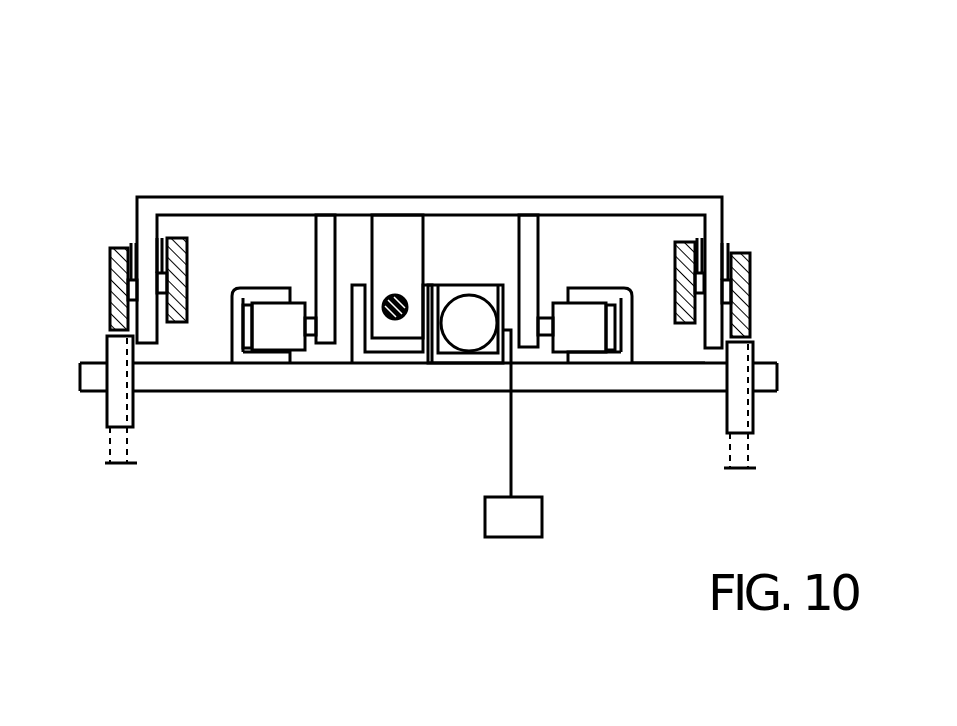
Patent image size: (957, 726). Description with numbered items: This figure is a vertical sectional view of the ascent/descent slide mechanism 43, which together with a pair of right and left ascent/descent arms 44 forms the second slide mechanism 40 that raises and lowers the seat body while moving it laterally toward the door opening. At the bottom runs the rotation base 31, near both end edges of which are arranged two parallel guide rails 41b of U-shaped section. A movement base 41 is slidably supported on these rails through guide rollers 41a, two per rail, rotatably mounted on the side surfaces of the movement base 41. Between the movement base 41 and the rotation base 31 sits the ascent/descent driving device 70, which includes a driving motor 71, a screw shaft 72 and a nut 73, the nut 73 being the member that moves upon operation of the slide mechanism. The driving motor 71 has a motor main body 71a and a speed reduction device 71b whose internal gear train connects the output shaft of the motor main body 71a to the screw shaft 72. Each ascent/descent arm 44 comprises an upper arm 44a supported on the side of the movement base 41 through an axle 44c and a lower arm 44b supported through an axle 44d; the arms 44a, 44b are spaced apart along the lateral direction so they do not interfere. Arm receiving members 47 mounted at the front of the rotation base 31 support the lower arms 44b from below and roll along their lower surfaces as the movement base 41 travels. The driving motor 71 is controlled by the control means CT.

The second slide mechanism 40 is at (429, 176).
The movement base 41 is at (513, 197).
The guide roller 41a is at (265, 343).
The guide rail 41b is at (230, 337).
The ascent/descent slide mechanism 43 is at (652, 327).
The ascent/descent arm 44 is at (197, 253).
The upper arm 44a is at (175, 238).
The lower arm 44b is at (118, 248).
The axle 44c is at (160, 238).
The axle 44d is at (131, 243).
The arm receiving member 47 is at (107, 398).
The rotation base 31 is at (315, 391).
The ascent/descent driving device 70 is at (421, 302).
The driving motor 71 is at (363, 423).
The motor main body 71a is at (467, 335).
The speed reduction device 71b is at (480, 295).
The screw shaft 72 is at (395, 295).
The nut 73 is at (385, 242).
The control means CT is at (513, 433).